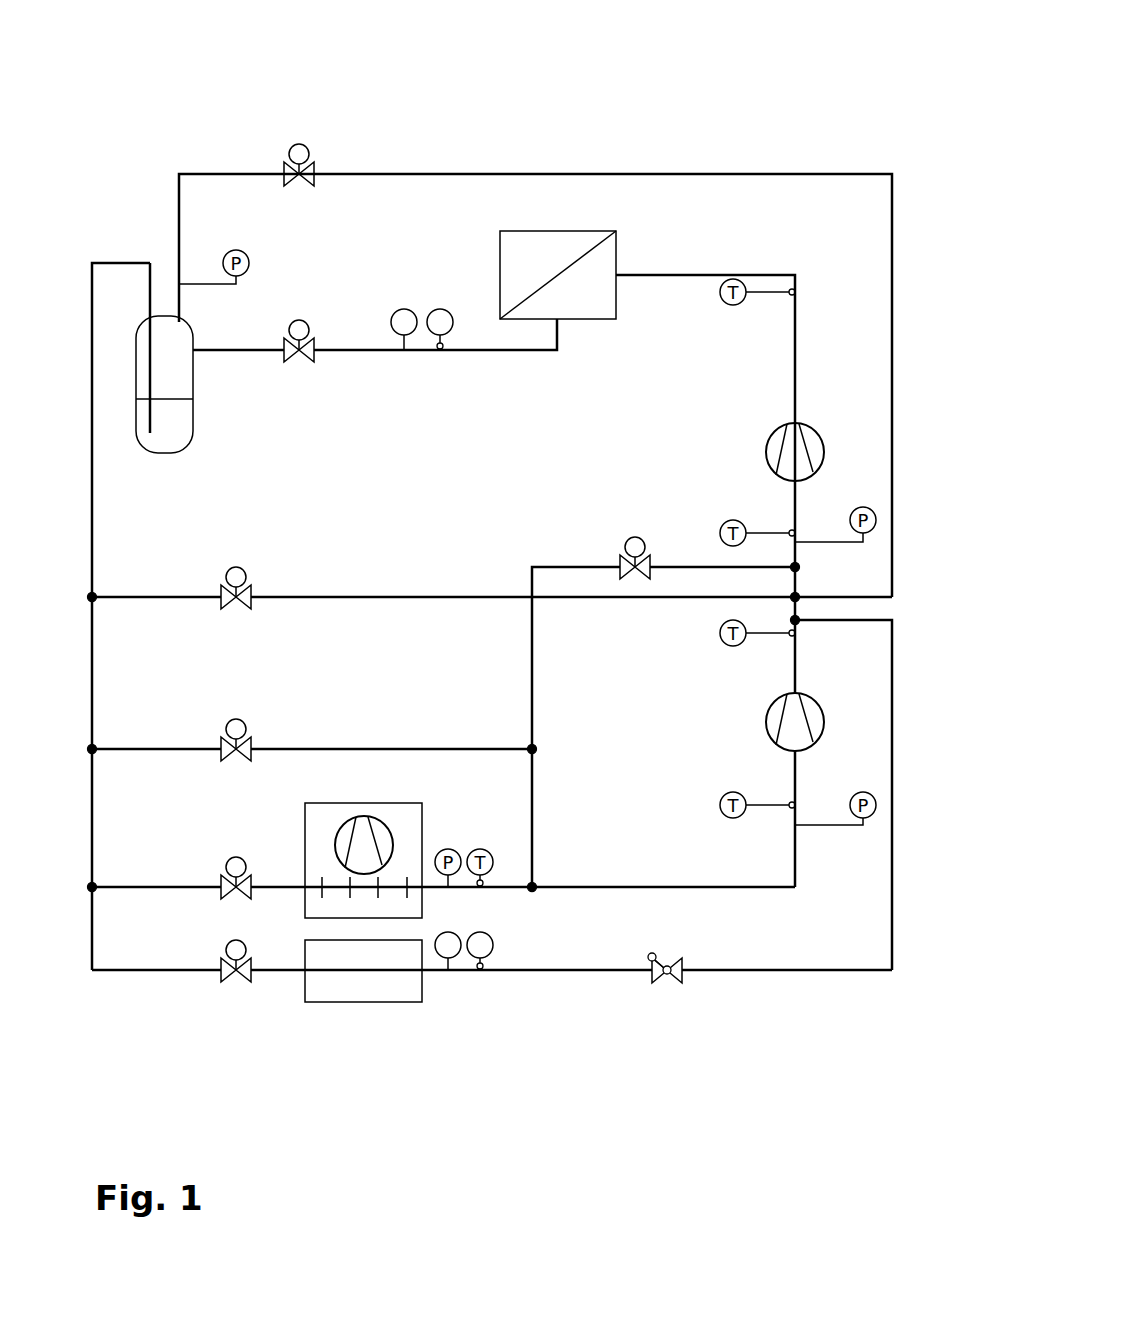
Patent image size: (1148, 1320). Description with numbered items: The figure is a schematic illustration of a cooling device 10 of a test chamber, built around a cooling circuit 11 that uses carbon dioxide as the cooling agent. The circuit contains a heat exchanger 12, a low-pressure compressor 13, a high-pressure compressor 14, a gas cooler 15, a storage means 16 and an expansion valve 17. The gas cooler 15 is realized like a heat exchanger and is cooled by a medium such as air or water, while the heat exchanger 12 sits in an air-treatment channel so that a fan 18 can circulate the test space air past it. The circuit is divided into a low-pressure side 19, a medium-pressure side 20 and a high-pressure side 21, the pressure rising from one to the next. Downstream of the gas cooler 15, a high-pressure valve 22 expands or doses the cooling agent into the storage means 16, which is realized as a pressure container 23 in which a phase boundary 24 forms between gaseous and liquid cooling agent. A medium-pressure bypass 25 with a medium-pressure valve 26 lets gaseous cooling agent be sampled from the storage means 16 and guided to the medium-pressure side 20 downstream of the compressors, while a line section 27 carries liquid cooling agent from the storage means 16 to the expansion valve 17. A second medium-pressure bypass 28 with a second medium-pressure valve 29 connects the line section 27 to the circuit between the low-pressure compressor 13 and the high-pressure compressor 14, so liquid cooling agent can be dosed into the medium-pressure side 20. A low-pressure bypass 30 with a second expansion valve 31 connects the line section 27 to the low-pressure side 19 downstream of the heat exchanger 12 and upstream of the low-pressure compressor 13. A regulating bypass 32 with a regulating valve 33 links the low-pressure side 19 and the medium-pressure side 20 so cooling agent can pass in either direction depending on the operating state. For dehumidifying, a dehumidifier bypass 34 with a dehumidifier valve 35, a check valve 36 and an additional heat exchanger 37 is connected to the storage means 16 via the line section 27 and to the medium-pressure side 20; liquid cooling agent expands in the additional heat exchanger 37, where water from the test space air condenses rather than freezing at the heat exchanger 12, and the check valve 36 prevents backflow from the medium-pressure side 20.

The cooling device 10 is at (813, 85).
The cooling circuit 11 is at (718, 153).
The heat exchanger 12 is at (288, 828).
The low-pressure compressor 13 is at (797, 720).
The high-pressure compressor 14 is at (797, 451).
The gas cooler 15 is at (560, 245).
The storage means 16 is at (211, 421).
The expansion valve 17 is at (236, 900).
The fan 18 is at (363, 838).
The low-pressure side 19 is at (625, 885).
The medium-pressure side 20 is at (797, 572).
The high-pressure side 21 is at (472, 352).
The high-pressure valve 22 is at (300, 364).
The pressure container 23 is at (175, 453).
The phase boundary 24 is at (170, 400).
The medium-pressure bypass 25 is at (437, 153).
The medium-pressure valve 26 is at (286, 170).
The line section 27 is at (86, 560).
The second medium-pressure bypass 28 is at (359, 578).
The second medium-pressure valve 29 is at (252, 595).
The low-pressure bypass 30 is at (358, 730).
The second expansion valve 31 is at (250, 748).
The regulating bypass 32 is at (553, 548).
The regulating valve 33 is at (650, 565).
The dehumidifier bypass 34 is at (541, 990).
The dehumidifier valve 35 is at (240, 985).
The check valve 36 is at (662, 985).
The additional heat exchanger 37 is at (372, 990).